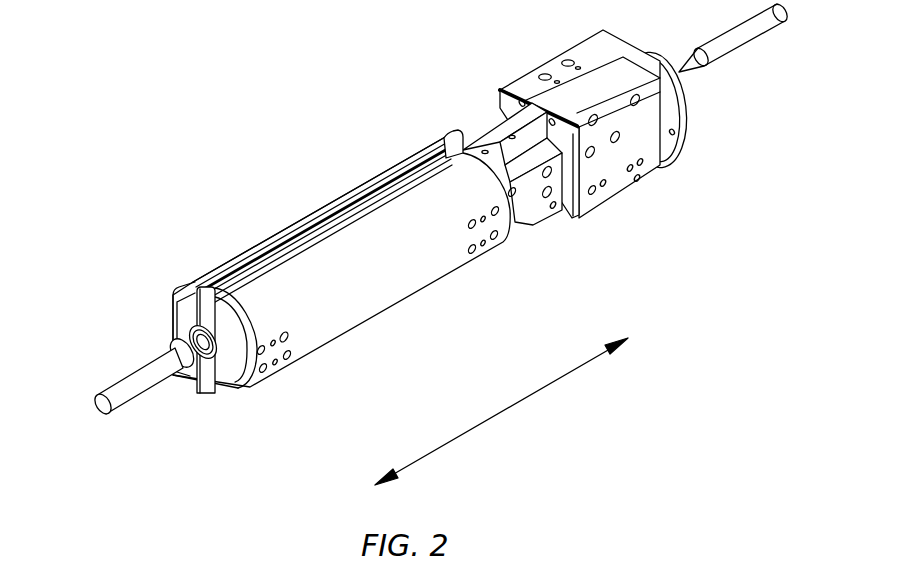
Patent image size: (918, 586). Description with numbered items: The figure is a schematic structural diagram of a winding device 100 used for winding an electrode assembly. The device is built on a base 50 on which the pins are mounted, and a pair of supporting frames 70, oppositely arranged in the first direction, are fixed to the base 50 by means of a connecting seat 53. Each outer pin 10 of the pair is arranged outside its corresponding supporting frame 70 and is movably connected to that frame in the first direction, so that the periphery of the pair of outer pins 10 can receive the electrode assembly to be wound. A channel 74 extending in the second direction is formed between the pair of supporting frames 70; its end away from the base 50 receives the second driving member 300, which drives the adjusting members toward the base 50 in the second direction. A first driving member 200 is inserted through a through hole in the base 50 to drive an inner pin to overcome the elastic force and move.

The winding device 100 is at (164, 28).
The outer pin 10 is at (172, 300).
The base 50 is at (528, 82).
The connecting seat 53 is at (580, 200).
The supporting frame 70 is at (195, 328).
The channel 74 is at (210, 340).
The first driving member 200 is at (747, 41).
The second driving member 300 is at (147, 362).